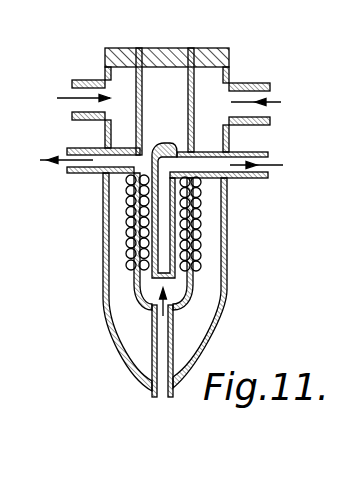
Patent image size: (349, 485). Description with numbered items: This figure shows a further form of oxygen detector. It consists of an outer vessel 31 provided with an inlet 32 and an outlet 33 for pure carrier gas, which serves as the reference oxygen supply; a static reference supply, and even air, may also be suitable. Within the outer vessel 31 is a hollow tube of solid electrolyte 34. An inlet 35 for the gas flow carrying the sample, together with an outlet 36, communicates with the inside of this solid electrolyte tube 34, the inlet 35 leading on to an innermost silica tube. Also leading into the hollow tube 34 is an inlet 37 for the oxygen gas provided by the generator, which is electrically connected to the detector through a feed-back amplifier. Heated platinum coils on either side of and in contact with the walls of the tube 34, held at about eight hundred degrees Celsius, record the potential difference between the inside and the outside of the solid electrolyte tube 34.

The outer vessel 31 is at (228, 255).
The inlet 32 is at (96, 82).
The outlet 33 is at (271, 86).
The hollow tube of solid electrolyte 34 is at (194, 90).
The inlet 35 is at (267, 156).
The outlet 36 is at (82, 148).
The inlet 37 is at (152, 348).